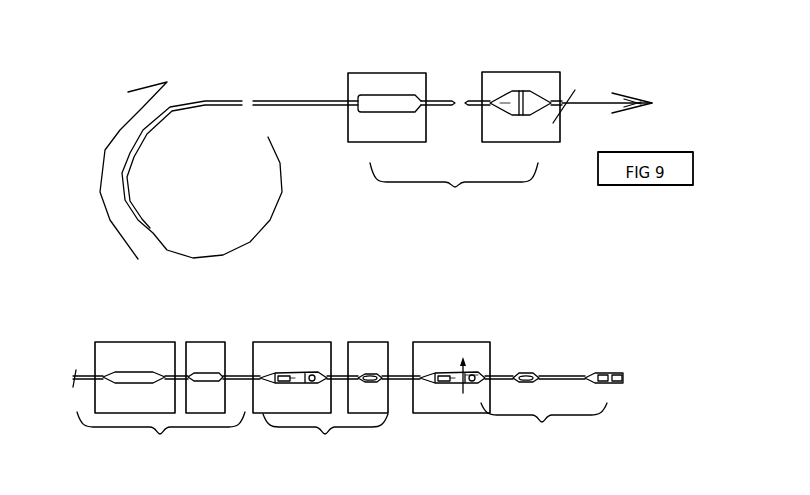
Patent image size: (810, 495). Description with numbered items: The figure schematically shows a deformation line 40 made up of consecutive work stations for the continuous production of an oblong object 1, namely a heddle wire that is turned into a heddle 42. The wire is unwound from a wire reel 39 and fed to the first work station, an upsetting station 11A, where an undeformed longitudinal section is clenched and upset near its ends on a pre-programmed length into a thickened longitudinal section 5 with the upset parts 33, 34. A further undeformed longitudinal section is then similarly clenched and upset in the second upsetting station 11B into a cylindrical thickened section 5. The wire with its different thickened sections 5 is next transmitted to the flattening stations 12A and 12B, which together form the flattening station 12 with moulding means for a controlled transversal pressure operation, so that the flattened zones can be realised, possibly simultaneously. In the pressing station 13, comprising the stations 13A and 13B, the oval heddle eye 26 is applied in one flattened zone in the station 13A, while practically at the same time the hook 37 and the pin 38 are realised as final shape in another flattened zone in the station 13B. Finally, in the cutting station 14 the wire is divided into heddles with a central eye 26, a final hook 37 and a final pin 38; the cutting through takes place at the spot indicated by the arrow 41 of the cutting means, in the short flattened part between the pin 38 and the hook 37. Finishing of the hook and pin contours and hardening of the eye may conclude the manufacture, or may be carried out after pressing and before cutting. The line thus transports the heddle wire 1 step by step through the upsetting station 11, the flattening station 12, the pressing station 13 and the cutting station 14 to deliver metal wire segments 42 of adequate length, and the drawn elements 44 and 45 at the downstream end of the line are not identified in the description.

The oblong object 1 is at (253, 104).
The thickened section 5 is at (389, 100).
The upsetting station 11 is at (454, 187).
The first upsetting station 11A is at (542, 82).
The second upsetting station 11B is at (407, 82).
The flattening station 12 is at (161, 435).
The first flattening station 12A is at (205, 377).
The second flattening station 12B is at (135, 377).
The pressing station 13 is at (325, 435).
The eye pressing station 13A is at (368, 377).
The hook and pin pressing station 13B is at (292, 377).
The cutting station 14 is at (451, 377).
The oval heddle eye 26 is at (375, 375).
The upset longitudinal section part 33 is at (505, 107).
The upset longitudinal section part 34 is at (520, 100).
The hook 37 is at (311, 375).
The pin 38 is at (295, 377).
The wire reel 39 is at (144, 221).
The deformation line 40 is at (236, 81).
The cutting means 41 is at (472, 373).
The heddle 42 is at (544, 424).
The lens balloon 44 is at (489, 371).
The tip member 45 is at (626, 370).